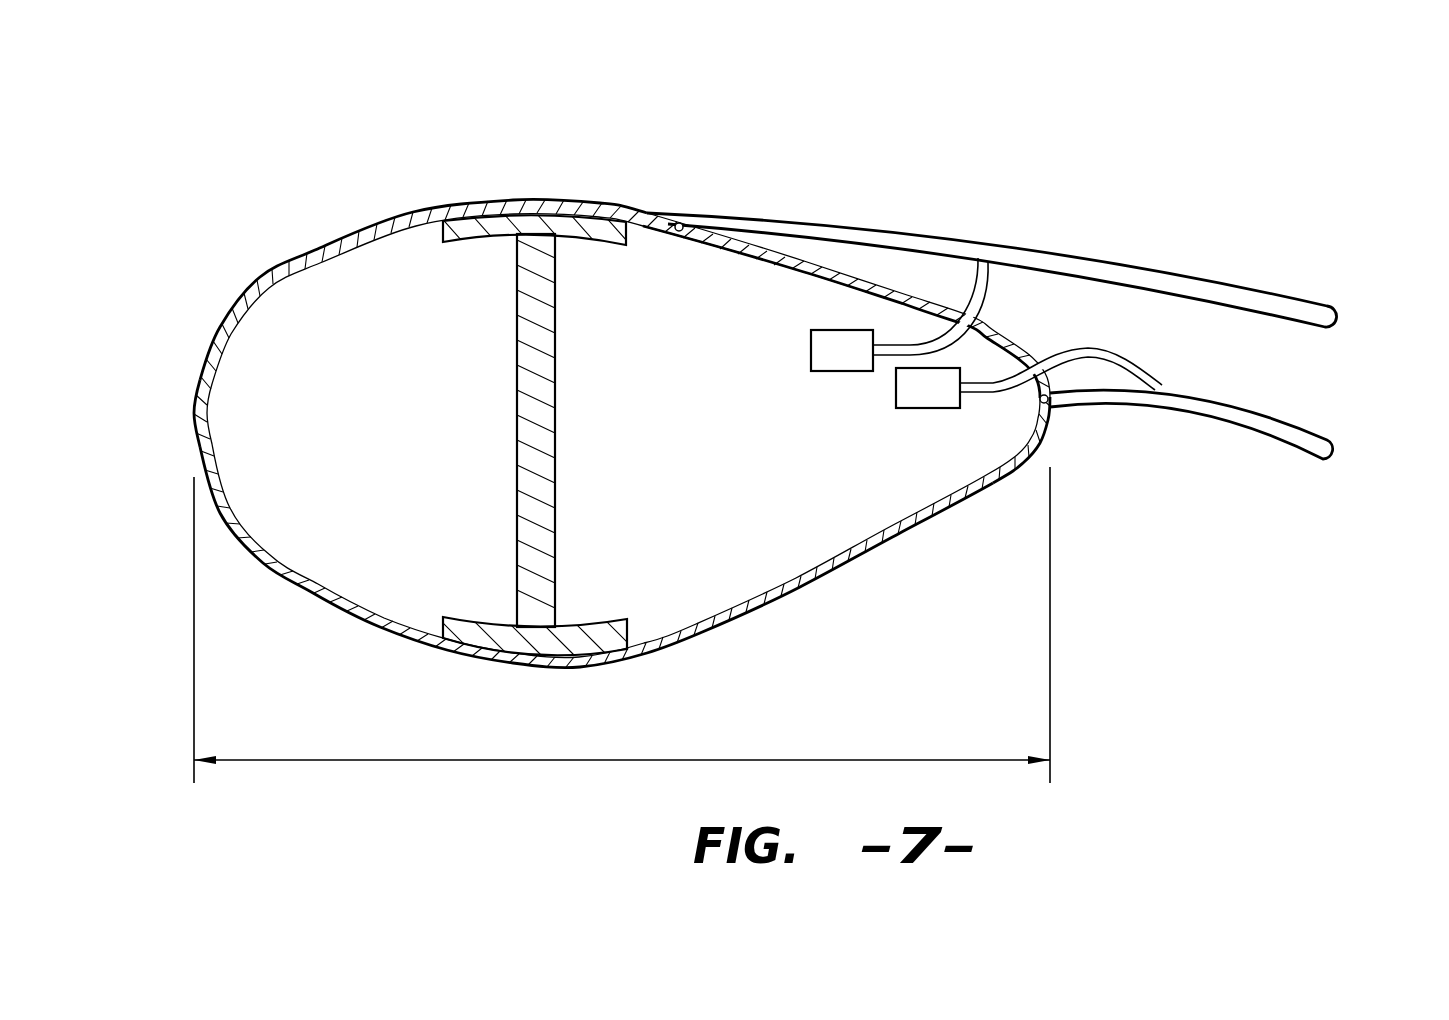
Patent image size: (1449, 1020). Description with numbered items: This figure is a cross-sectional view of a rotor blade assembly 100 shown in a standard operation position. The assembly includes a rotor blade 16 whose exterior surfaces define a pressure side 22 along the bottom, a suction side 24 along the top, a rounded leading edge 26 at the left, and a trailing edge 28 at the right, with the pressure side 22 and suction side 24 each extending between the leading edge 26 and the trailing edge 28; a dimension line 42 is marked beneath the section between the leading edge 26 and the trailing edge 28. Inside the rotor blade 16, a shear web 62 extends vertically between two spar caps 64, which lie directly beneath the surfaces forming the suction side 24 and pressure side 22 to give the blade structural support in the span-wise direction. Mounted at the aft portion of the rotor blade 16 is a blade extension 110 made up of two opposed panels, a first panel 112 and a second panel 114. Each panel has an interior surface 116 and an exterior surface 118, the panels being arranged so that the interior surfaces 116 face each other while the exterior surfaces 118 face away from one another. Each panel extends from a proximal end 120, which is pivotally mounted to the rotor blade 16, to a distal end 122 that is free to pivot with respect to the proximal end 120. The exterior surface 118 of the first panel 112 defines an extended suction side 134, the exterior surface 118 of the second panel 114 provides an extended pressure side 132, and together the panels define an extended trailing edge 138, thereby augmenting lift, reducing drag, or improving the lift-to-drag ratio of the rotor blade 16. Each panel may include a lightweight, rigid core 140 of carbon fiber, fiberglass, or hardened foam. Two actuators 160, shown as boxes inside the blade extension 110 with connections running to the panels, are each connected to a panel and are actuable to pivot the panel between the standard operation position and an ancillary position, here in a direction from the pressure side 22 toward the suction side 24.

The rotor blade assembly 100 is at (303, 140).
The rotor blade 16 is at (273, 253).
The suction side 24 is at (515, 200).
The pressure side 22 is at (537, 668).
The leading edge 26 is at (192, 425).
The trailing edge 28 is at (1063, 420).
The chord length 42 is at (473, 760).
The shear web 62 is at (540, 443).
The spar caps 64 is at (593, 240).
The blade extension 110 is at (1087, 188).
The first panel 112 is at (1045, 228).
The second panel 114 is at (1223, 430).
The interior surface 116 is at (1137, 287).
The exterior surface 118 is at (913, 230).
The proximal end 120 is at (665, 207).
The distal end 122 is at (1343, 297).
The extended pressure side 132 is at (1270, 442).
The extended suction side 134 is at (1147, 238).
The extended trailing edge 138 is at (1353, 380).
The core 140 is at (1197, 290).
The actuator 160 is at (893, 387).